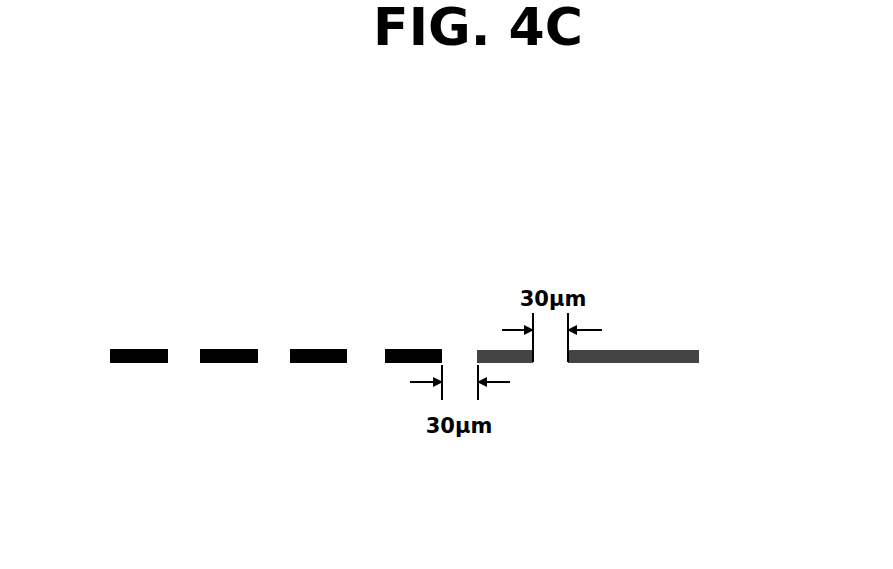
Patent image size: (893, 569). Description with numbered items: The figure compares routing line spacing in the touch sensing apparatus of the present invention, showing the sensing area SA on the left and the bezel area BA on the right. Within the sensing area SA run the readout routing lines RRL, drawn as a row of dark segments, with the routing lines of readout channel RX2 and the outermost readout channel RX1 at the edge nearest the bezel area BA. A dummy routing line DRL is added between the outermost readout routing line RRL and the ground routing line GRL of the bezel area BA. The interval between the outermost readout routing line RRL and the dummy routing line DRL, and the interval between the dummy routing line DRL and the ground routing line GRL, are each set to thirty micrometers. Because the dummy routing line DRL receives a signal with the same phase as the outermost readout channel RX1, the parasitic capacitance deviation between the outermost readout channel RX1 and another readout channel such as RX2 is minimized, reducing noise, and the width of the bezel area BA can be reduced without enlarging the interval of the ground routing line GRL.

The sensing area SA is at (108, 258).
The bezel area BA is at (778, 278).
The readout routing line RRL is at (150, 354).
The outermost readout channel RX1 is at (413, 339).
The readout channel RX2 is at (318, 339).
The dummy routing line DRL is at (518, 363).
The ground routing line GRL is at (633, 376).